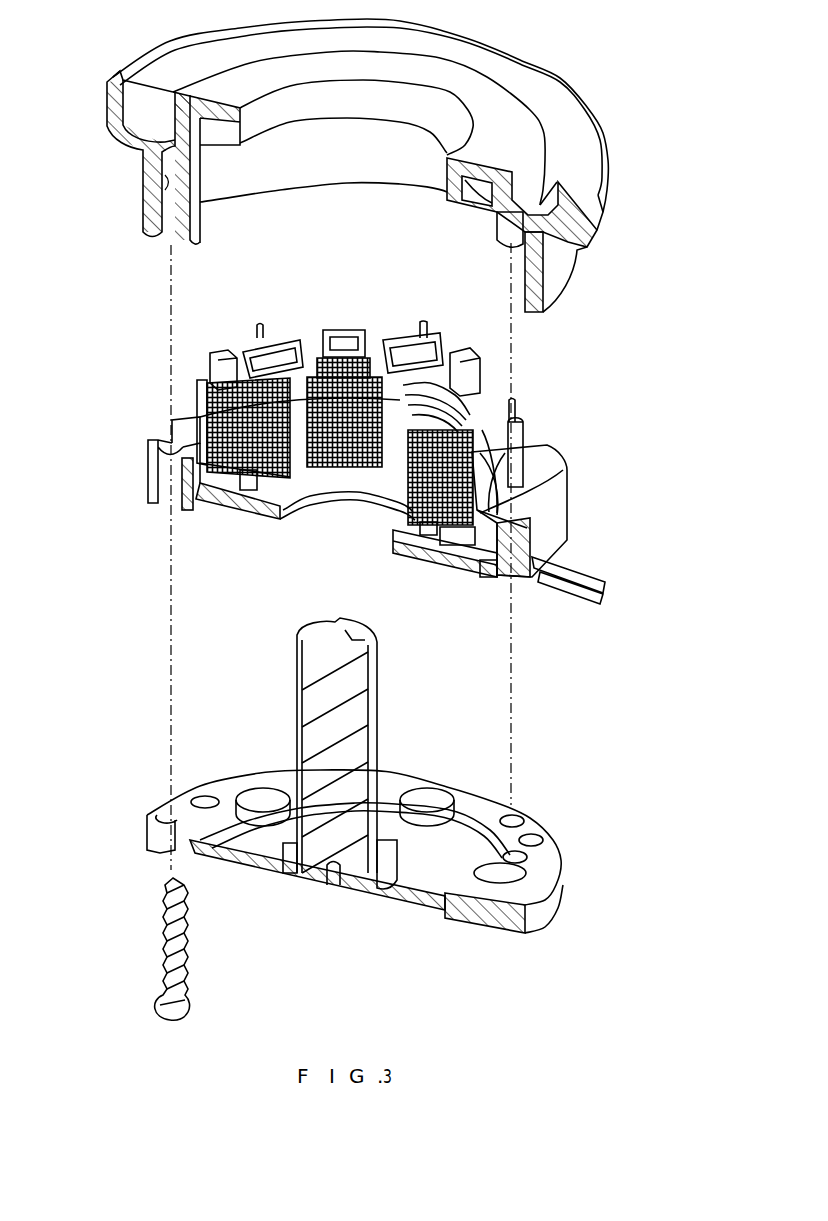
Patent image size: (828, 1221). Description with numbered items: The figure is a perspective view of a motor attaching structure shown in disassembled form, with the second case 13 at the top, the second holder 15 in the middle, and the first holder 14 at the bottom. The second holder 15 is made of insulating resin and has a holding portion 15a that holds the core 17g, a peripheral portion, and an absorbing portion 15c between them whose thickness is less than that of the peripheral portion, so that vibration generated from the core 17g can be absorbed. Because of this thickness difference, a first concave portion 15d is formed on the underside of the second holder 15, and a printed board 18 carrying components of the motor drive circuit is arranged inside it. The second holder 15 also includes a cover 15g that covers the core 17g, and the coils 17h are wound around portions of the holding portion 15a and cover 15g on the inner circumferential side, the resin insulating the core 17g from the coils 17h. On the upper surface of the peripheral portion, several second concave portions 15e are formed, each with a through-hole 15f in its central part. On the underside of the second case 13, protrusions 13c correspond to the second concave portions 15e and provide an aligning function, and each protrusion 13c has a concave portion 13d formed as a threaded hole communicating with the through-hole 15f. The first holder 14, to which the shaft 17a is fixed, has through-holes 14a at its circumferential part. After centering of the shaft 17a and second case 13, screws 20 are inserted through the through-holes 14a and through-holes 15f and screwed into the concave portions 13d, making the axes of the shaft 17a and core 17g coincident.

The second case 13 is at (600, 186).
The protrusion 13c is at (150, 226).
The concave portion 13d is at (150, 186).
The first holder 14 is at (364, 855).
The through-hole 14a is at (167, 817).
The second holder 15 is at (383, 477).
The holding portion 15a is at (456, 530).
The absorbing portion 15c is at (487, 570).
The first concave portion 15d is at (203, 507).
The second concave portion 15e is at (165, 433).
The through-hole 15f is at (150, 485).
The cover 15g is at (480, 457).
The shaft 17a is at (353, 873).
The core 17g is at (400, 512).
The coil 17h is at (428, 530).
The printed board 18 is at (253, 513).
The screw 20 is at (162, 953).